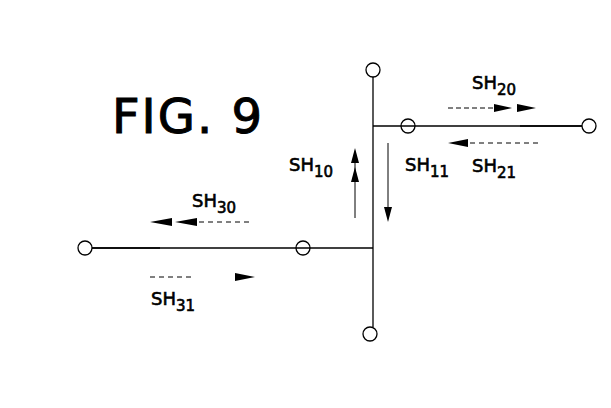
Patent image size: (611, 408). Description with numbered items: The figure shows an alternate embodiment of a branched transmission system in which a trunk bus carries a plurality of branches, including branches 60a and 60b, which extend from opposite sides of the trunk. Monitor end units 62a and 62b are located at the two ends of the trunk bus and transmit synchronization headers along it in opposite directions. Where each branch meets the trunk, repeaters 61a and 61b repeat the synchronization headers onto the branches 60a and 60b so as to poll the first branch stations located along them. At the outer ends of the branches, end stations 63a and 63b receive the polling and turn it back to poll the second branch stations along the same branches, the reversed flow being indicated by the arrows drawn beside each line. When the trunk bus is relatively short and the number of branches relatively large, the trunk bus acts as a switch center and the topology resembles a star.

The branch 60a is at (133, 250).
The branch 60b is at (545, 126).
The repeater 61a is at (303, 255).
The repeater 61b is at (408, 119).
The monitor end unit 62a is at (367, 66).
The monitor end unit 62b is at (363, 335).
The end station 63a is at (87, 241).
The end station 63b is at (589, 119).